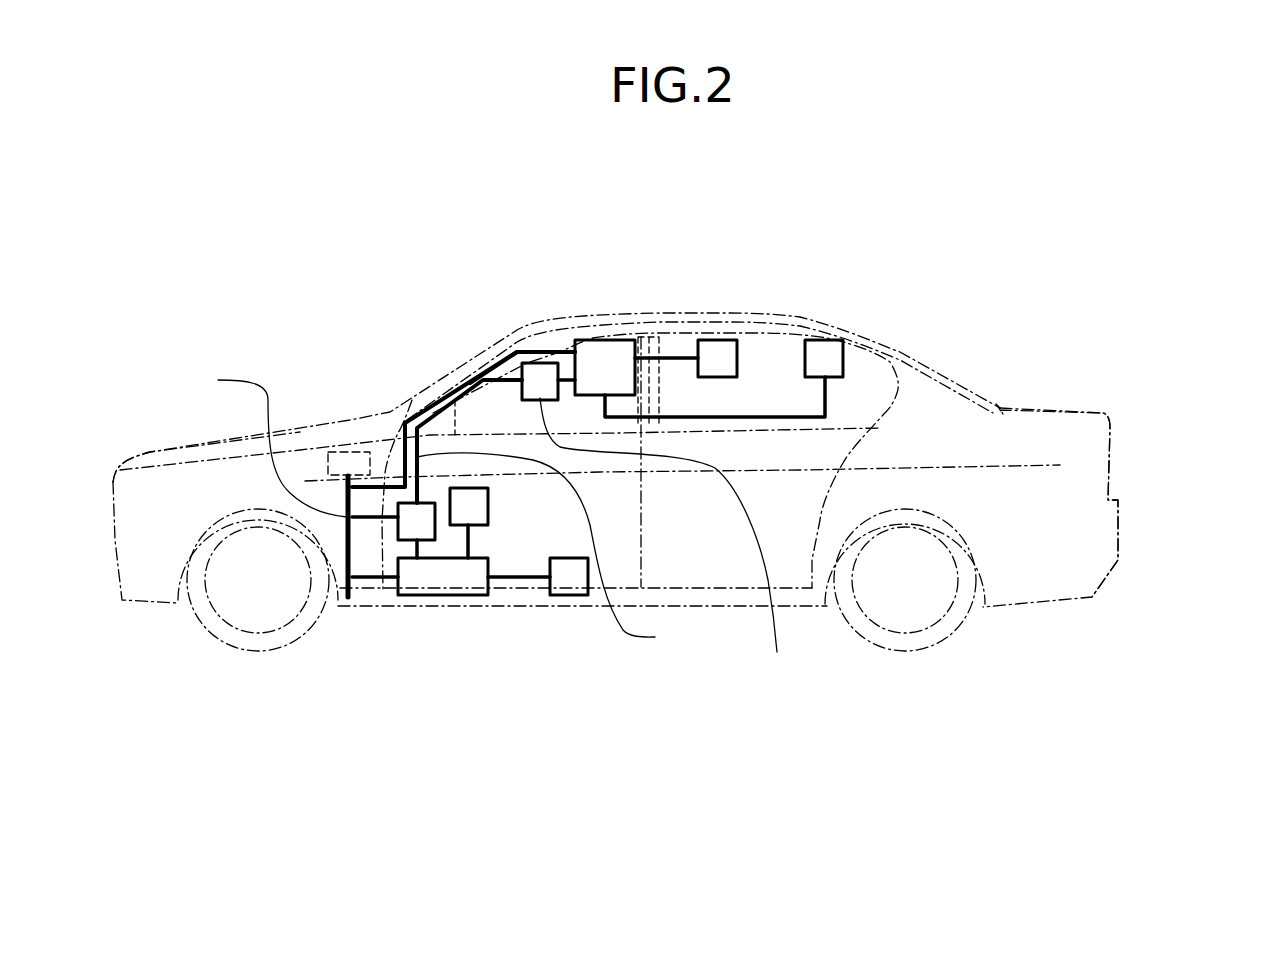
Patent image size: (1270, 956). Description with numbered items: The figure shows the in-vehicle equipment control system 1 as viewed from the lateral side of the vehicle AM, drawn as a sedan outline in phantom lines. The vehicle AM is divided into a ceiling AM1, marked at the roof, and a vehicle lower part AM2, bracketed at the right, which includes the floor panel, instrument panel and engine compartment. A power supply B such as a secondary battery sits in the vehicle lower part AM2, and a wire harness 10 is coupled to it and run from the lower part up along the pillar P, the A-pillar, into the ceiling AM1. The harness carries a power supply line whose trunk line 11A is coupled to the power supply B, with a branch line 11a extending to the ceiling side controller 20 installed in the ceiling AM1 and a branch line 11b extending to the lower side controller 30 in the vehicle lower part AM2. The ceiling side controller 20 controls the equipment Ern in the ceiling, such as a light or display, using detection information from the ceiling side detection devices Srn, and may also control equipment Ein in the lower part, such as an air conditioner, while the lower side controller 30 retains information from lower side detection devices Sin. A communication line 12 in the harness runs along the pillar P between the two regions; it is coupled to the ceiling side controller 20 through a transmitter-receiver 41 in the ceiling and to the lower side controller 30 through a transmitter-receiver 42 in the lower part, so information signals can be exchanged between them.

The in-vehicle equipment control system 1 is at (441, 205).
The wire harness 10 is at (412, 367).
The branch line 11a is at (540, 352).
The trunk line 11A is at (347, 515).
The branch line 11b is at (367, 580).
The communication line 12 is at (582, 551).
The ceiling side controller 20 is at (583, 340).
The lower side controller 30 is at (433, 597).
The transmitter-receiver 41 is at (691, 542).
The transmitter-receiver 42 is at (262, 444).
The pillar P is at (455, 400).
The power supply B is at (345, 452).
The vehicle AM is at (150, 452).
The ceiling AM1 is at (650, 315).
The vehicle lower part AM2 is at (1155, 352).
The equipment Ern is at (737, 352).
The ceiling side detection device Srn is at (843, 356).
The equipment Ein is at (490, 510).
The lower side detection device Sin is at (553, 566).